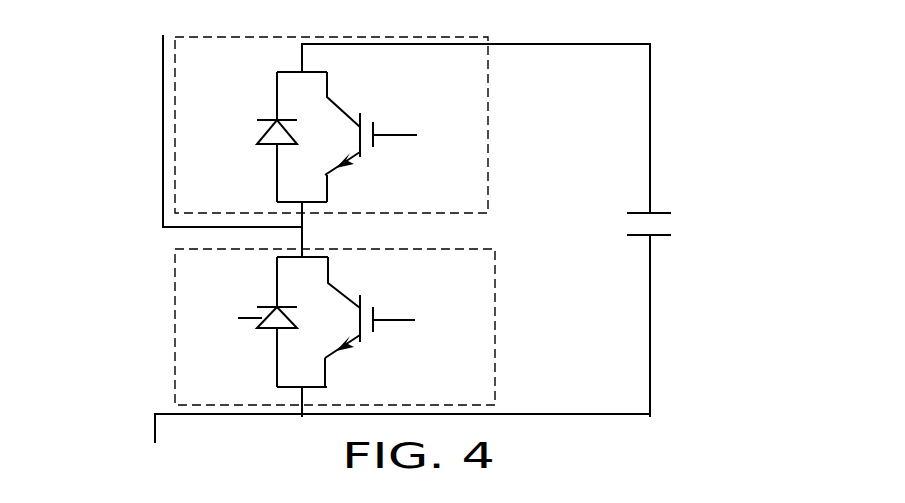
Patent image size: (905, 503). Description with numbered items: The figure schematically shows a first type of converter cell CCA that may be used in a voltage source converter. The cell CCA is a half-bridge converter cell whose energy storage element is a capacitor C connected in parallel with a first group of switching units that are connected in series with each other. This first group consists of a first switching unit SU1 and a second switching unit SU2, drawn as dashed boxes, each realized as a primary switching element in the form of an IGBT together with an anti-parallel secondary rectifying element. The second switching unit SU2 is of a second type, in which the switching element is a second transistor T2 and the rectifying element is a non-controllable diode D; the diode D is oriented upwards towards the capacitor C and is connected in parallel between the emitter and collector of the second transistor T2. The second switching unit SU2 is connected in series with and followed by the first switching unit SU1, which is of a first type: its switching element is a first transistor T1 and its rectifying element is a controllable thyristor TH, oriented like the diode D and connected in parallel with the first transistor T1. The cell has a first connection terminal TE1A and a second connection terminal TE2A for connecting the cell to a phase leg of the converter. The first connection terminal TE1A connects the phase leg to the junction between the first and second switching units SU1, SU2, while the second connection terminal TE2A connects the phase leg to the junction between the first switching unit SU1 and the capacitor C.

The first connection terminal TE1A is at (170, 131).
The second connection terminal TE2A is at (344, 437).
The converter cell CCA is at (703, 108).
The first switching unit SU1 is at (492, 357).
The second switching unit SU2 is at (487, 153).
The diode D is at (257, 137).
The thyristor TH is at (245, 322).
The first transistor T1 is at (378, 322).
The second transistor T2 is at (376, 137).
The capacitor C is at (629, 224).